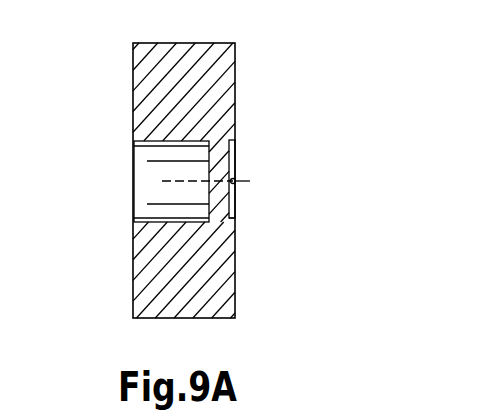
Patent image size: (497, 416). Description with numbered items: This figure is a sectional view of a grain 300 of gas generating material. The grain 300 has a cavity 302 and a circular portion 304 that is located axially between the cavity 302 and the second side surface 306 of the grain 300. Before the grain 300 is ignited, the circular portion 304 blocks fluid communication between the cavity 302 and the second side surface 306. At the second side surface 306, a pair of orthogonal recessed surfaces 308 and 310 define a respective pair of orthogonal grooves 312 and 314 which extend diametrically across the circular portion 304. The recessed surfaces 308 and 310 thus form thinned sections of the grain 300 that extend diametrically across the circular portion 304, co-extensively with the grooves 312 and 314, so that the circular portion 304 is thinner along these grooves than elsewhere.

The grain 300 is at (102, 45).
The cavity 302 is at (142, 181).
The circular portion 304 is at (237, 142).
The second side surface 306 is at (237, 63).
The recessed surface 308 is at (237, 164).
The recessed surface 310 is at (238, 183).
The groove 312 is at (247, 222).
The groove 314 is at (250, 170).